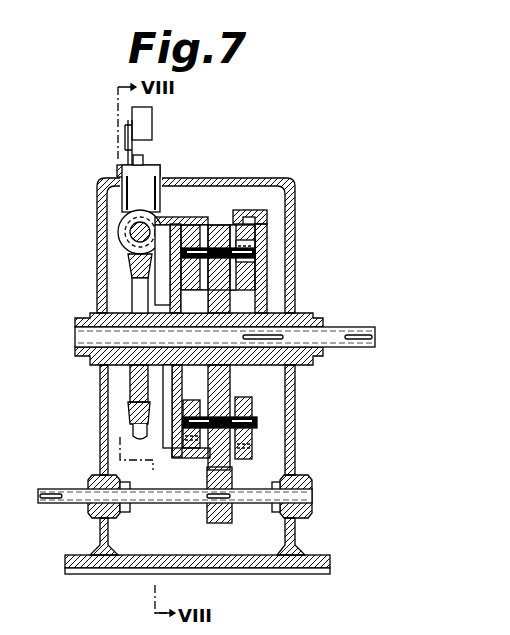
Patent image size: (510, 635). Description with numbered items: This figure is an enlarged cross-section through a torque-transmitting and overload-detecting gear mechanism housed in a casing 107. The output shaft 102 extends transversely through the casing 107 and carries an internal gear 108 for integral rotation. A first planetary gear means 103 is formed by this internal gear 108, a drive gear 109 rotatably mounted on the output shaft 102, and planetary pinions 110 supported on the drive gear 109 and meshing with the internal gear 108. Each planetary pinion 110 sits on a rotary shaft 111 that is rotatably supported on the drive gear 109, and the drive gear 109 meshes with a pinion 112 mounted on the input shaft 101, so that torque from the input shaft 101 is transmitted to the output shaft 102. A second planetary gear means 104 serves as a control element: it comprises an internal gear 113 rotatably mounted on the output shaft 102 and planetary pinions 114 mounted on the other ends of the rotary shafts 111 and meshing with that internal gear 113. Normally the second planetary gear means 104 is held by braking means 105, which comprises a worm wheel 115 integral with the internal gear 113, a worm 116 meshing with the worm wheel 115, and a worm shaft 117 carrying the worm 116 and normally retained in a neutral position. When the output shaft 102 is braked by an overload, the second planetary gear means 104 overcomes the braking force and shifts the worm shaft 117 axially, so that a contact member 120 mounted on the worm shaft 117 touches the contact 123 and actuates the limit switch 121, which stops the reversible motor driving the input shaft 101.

The input shaft 101 is at (67, 489).
The output shaft 102 is at (342, 327).
The first planetary gear means 103 is at (251, 197).
The second planetary gear means 104 is at (207, 215).
The braking means 105 is at (113, 263).
The casing 107 is at (295, 200).
The internal gear 108 is at (250, 207).
The drive gear 109 is at (220, 294).
The planetary pinions 110 is at (250, 242).
The rotary shaft 111 is at (218, 248).
The pinion 112 is at (224, 523).
The internal gear 113 is at (182, 215).
The planetary pinions 114 is at (173, 287).
The worm wheel 115 is at (137, 410).
The worm 116 is at (120, 238).
The worm shaft 117 is at (135, 230).
The contact member 120 is at (150, 165).
The limit switch 121 is at (152, 115).
The contact 123 is at (128, 143).